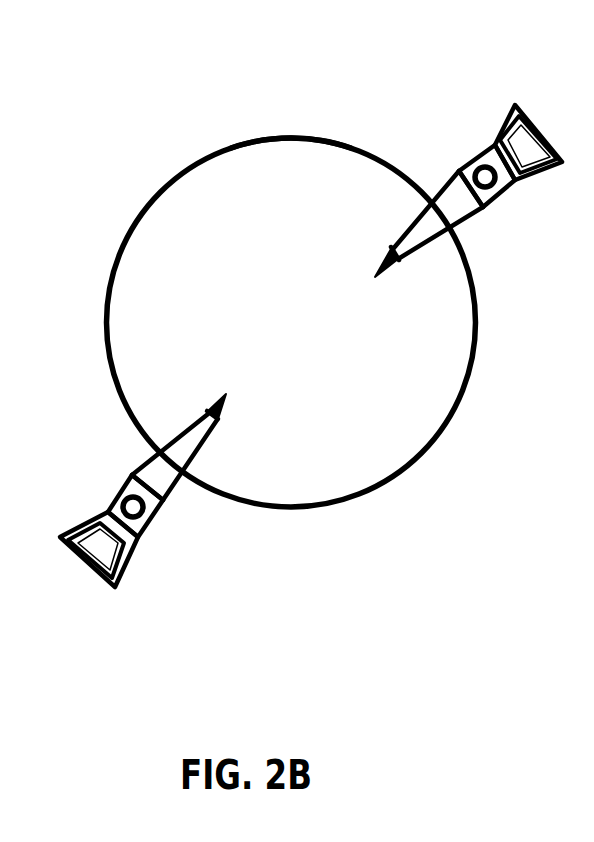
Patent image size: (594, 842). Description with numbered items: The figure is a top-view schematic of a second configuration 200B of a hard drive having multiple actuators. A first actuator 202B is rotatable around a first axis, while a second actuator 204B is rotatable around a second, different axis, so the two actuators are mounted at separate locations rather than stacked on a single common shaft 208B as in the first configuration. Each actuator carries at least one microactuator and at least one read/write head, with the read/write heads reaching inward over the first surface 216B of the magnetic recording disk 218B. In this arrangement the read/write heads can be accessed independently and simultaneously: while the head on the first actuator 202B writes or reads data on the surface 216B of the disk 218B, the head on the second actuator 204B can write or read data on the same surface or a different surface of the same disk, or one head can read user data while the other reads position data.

The second configuration 200B is at (133, 68).
The first actuator 202B is at (151, 496).
The second actuator 204B is at (449, 172).
The common shaft 208B is at (148, 488).
The first surface 216B is at (203, 270).
The magnetic recording disk 218B is at (234, 142).